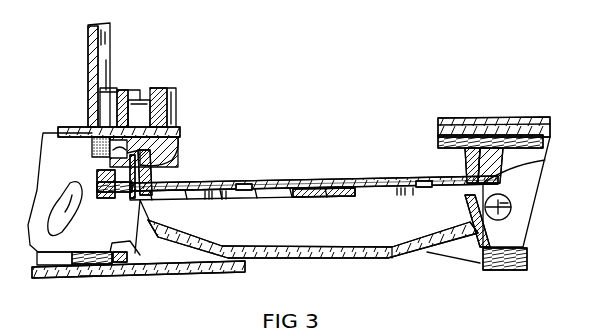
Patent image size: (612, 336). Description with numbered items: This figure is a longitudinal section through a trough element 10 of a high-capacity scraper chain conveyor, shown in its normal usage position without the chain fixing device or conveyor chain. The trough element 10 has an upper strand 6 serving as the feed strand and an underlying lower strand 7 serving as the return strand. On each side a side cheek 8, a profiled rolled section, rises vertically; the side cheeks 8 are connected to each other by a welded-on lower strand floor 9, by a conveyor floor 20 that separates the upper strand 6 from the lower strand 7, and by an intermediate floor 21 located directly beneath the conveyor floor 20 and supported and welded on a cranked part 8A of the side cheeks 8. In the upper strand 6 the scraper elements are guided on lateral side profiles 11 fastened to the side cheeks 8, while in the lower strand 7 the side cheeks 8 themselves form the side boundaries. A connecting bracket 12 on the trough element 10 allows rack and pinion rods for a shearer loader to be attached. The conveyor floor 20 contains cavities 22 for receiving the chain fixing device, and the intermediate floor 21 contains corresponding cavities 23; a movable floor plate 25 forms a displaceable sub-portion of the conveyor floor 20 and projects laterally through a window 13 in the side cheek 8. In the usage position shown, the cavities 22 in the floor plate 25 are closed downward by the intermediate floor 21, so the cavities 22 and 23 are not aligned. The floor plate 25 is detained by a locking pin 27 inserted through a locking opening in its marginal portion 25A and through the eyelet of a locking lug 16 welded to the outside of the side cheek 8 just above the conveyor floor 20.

The upper strand 6 is at (318, 152).
The lower strand 7 is at (318, 234).
The side cheek 8 is at (147, 225).
The cranked part 8A is at (473, 200).
The lower strand floor 9 is at (373, 247).
The trough element 10 is at (326, 79).
The side profile 11 is at (180, 157).
The connecting bracket 12 is at (178, 100).
The window 13 is at (131, 197).
The locking lug 16 is at (120, 176).
The conveyor floor 20 is at (377, 174).
The intermediate floor 21 is at (273, 196).
The cavity 22 is at (243, 182).
The cavity 23 is at (213, 197).
The floor plate 25 is at (338, 183).
The marginal portion 25A is at (118, 193).
The locking pin 27 is at (97, 185).